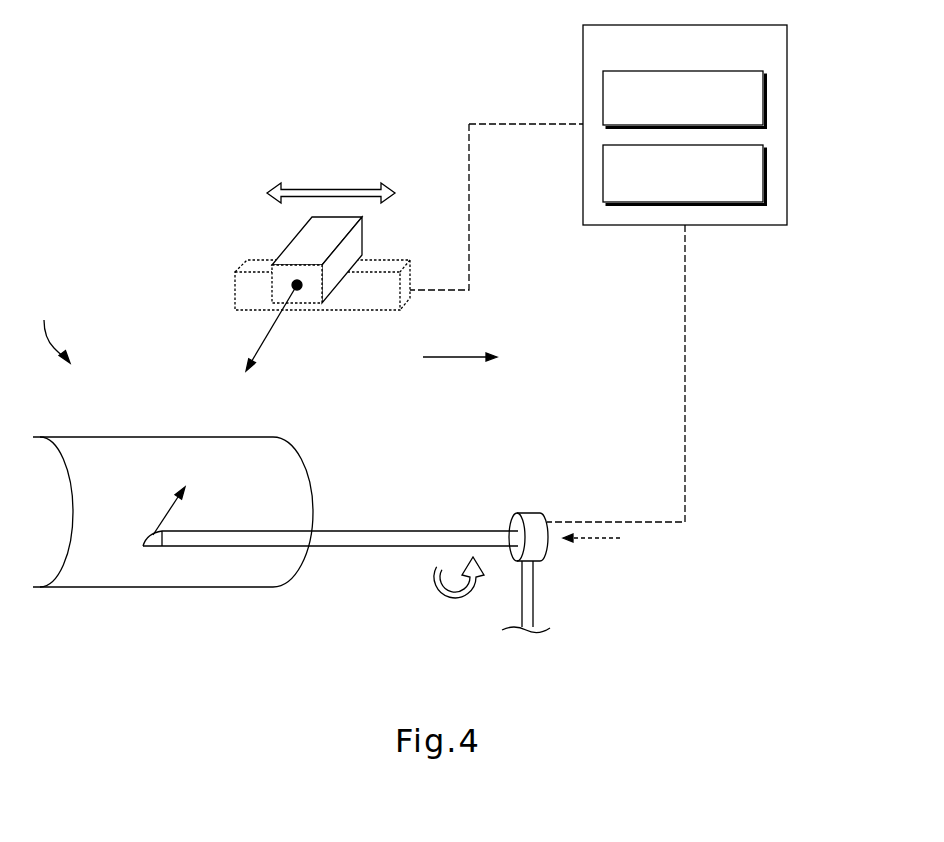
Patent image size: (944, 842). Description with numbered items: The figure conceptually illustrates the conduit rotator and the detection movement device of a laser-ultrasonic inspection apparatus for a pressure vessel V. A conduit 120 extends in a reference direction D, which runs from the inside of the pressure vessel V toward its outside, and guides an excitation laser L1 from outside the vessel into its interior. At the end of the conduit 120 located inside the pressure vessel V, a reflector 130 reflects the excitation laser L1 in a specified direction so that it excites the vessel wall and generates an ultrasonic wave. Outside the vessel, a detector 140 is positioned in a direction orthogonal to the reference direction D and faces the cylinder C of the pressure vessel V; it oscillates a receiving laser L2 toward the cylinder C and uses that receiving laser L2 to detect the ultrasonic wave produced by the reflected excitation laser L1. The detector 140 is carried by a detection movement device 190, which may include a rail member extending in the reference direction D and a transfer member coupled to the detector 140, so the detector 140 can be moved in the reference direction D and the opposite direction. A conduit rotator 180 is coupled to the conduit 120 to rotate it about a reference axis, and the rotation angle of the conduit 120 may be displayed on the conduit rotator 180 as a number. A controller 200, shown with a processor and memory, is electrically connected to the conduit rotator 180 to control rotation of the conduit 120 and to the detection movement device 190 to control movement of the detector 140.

The controller 200 is at (787, 43).
The detection movement device 190 is at (402, 303).
The detector 140 is at (358, 243).
The receiving laser L2 is at (268, 338).
The reference direction D is at (471, 357).
The pressure vessel V is at (54, 330).
The cylinder C is at (95, 450).
The conduit 120 is at (450, 530).
The reflector 130 is at (147, 546).
The excitation laser L1 is at (153, 530).
The conduit rotator 180 is at (532, 518).